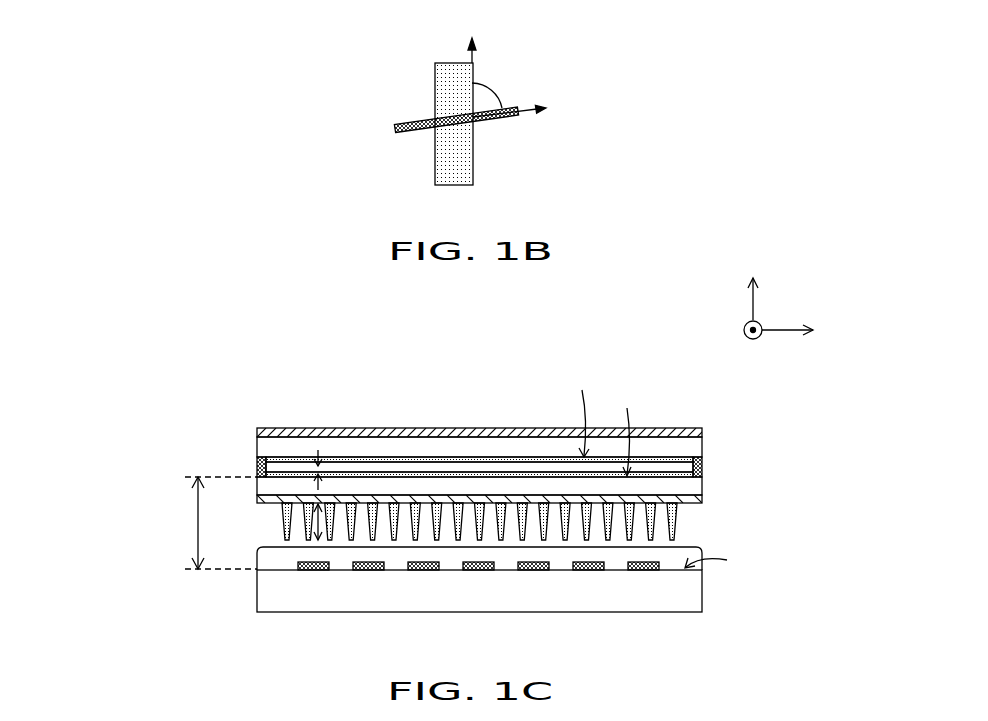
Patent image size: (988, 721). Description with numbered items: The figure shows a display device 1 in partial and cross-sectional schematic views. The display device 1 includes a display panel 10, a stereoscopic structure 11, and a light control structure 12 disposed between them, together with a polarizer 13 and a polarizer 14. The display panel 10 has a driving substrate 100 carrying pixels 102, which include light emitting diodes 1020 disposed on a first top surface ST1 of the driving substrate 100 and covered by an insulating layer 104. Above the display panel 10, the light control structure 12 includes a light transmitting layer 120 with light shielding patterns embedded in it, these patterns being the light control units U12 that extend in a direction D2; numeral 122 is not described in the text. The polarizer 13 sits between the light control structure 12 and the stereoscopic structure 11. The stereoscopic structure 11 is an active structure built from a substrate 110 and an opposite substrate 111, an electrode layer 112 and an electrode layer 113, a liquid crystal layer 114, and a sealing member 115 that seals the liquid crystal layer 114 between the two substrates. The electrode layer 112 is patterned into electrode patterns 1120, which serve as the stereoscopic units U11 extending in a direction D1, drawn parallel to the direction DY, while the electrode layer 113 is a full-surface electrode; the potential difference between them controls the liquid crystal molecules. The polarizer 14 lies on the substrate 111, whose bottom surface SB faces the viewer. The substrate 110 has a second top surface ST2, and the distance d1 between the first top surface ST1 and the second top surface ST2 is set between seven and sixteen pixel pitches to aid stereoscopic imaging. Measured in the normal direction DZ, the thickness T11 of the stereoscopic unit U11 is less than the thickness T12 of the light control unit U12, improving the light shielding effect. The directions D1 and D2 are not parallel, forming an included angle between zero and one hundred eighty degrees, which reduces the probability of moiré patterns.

In FIG. 1C, the display device 1 is at (818, 676).
In FIG. 1C, the display panel 10 is at (95, 305).
In FIG. 1C, the driving substrate 100 is at (731, 600).
In FIG. 1C, the pixels 102 is at (386, 506).
In FIG. 1C, the light emitting diodes 1020 is at (647, 571).
In FIG. 1C, the insulating layer 104 is at (731, 538).
In FIG. 1C, the stereoscopic structure 11 is at (95, 403).
In FIG. 1C, the substrate 110 is at (731, 512).
In FIG. 1C, the substrate 111 is at (731, 418).
In FIG. 1C, the electrode layer 112 is at (465, 480).
In FIG. 1C, the electrode patterns 1120 is at (688, 476).
In FIG. 1C, the electrode layer 113 is at (731, 442).
In FIG. 1C, the liquid crystal layer 114 is at (732, 395).
In FIG. 1C, the sealing member 115 is at (731, 465).
In FIG. 1C, the light control structure 12 is at (95, 583).
In FIG. 1C, the light transmitting layer 120 is at (388, 556).
In FIG. 1C, the gap medium 122 is at (117, 638).
In FIG. 1C, the polarizer 13 is at (258, 499).
In FIG. 1C, the polarizer 14 is at (257, 431).
In FIG. 1B, the stereoscopic units U11 is at (435, 88).
In FIG. 1B, the light control units U12 is at (395, 128).
In FIG. 1C, the light control units U12 is at (284, 524).
In FIG. 1C, the thickness of the stereoscopic unit T11 is at (318, 450).
In FIG. 1C, the thickness of the light control unit T12 is at (320, 522).
In FIG. 1C, the distance d1 is at (212, 523).
In FIG. 1C, the bottom surface SB is at (575, 411).
In FIG. 1C, the first top surface ST1 is at (727, 566).
In FIG. 1C, the second top surface ST2 is at (626, 430).
In FIG. 1B, the direction D1 is at (471, 36).
In FIG. 1C, the direction D1 is at (808, 331).
In FIG. 1B, the direction D2 is at (526, 111).
In FIG. 1C, the direction D2 is at (735, 331).
In FIG. 1C, the direction DZ is at (756, 286).
In FIG. 1C, the direction DY is at (877, 331).